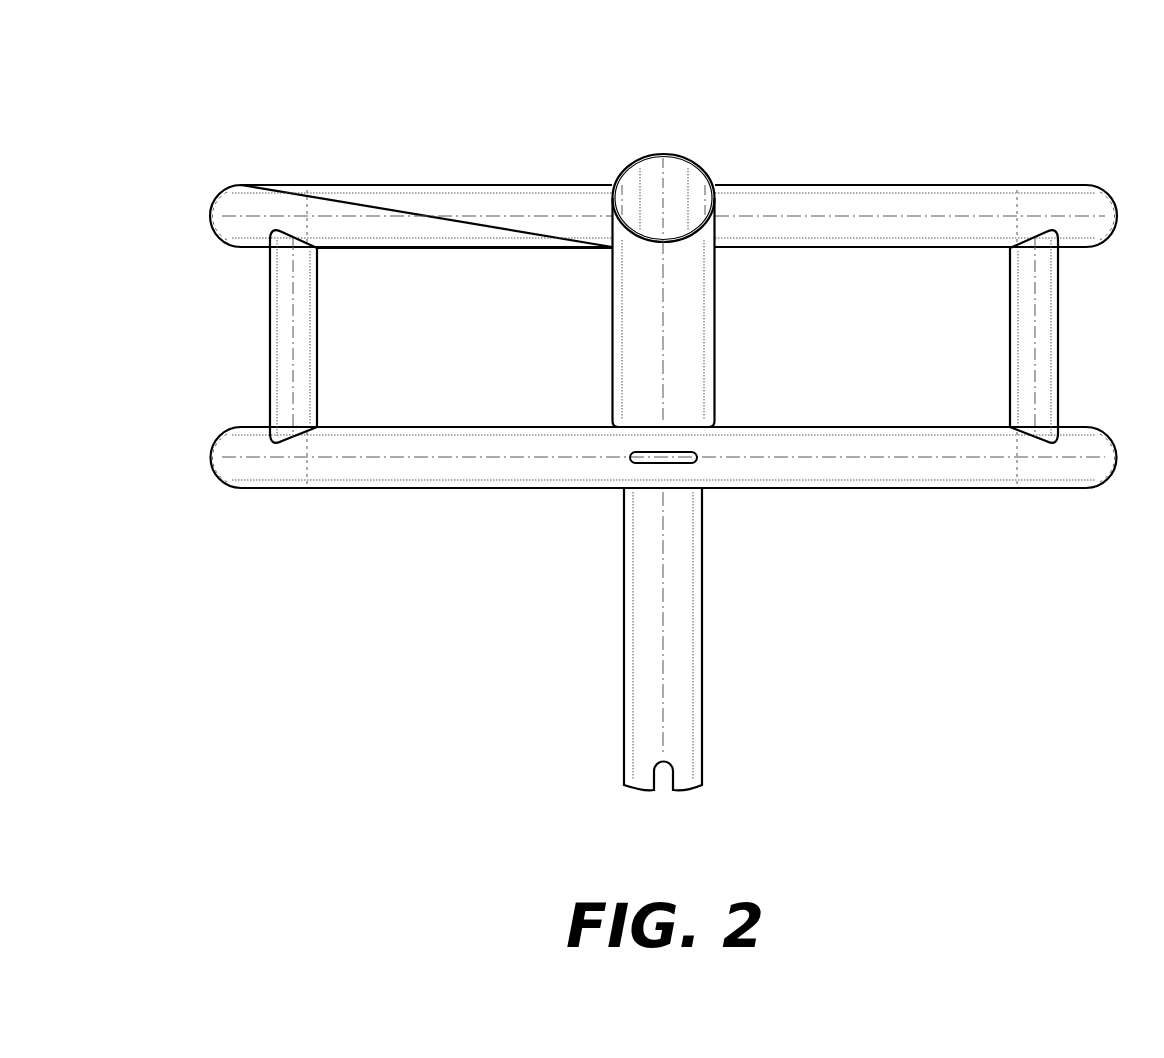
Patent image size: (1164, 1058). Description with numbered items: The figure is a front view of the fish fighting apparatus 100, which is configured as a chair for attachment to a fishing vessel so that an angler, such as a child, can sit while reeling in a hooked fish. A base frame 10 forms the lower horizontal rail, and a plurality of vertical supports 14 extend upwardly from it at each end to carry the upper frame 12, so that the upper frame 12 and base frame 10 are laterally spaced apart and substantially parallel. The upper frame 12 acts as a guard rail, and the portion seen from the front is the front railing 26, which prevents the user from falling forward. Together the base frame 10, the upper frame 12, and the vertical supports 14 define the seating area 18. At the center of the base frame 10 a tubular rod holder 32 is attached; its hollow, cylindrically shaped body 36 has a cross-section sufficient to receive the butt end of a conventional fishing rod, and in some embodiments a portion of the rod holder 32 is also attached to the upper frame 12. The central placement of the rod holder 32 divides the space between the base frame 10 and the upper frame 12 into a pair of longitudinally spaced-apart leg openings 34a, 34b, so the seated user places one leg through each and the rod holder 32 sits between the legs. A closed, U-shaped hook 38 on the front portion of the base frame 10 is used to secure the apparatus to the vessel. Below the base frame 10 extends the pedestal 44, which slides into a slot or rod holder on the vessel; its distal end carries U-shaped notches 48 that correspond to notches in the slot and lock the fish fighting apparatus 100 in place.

The fish fighting apparatus 100 is at (162, 140).
The base frame 10 is at (1080, 475).
The upper frame 12 is at (960, 187).
The vertical supports 14 is at (280, 326).
The seating area 18 is at (490, 288).
The front railing 26 is at (788, 205).
The rod holder 32 is at (663, 153).
The leg opening 34a is at (435, 406).
The leg opening 34b is at (880, 354).
The cylindrically shaped body 36 is at (695, 343).
The closed hook 38 is at (682, 459).
The pedestal 44 is at (682, 710).
The notches 48 is at (668, 775).